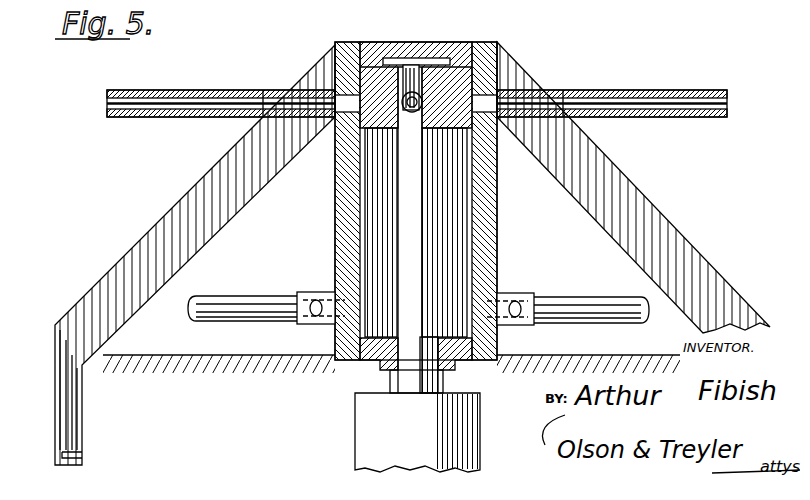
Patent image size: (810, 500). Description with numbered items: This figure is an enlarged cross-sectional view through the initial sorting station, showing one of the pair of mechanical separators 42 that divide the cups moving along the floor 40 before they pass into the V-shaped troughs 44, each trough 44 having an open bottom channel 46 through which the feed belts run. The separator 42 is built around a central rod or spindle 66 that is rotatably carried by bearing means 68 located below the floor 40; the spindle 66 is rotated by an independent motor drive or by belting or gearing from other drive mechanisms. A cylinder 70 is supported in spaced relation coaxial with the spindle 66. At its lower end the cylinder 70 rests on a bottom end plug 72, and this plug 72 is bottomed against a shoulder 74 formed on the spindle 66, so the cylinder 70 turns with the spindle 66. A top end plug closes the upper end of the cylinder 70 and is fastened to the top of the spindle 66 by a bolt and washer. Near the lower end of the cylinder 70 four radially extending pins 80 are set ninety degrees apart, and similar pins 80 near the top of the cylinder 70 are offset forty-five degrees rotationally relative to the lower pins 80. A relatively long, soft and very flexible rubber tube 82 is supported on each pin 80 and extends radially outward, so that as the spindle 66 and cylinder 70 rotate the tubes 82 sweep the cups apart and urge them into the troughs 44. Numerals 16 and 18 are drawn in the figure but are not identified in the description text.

The cap sleeve 16 is at (365, 42).
The bolt 18 is at (420, 46).
The floor 40 is at (566, 357).
The mechanical separator 42 is at (505, 38).
The trough 44 is at (192, 190).
The open bottom channel 46 is at (55, 340).
The central rod or spindle 66 is at (424, 248).
The bearing means 68 is at (355, 440).
The cylinder 70 is at (352, 200).
The bottom end plug 72 is at (378, 357).
The shoulder 74 is at (442, 376).
The radially extending pin 80 is at (295, 102).
The flexible rubber tube 82 is at (145, 90).